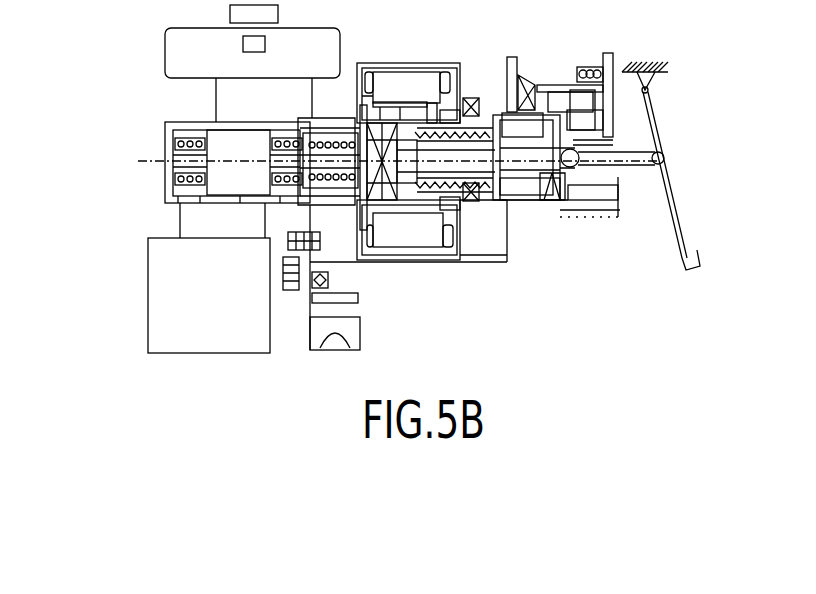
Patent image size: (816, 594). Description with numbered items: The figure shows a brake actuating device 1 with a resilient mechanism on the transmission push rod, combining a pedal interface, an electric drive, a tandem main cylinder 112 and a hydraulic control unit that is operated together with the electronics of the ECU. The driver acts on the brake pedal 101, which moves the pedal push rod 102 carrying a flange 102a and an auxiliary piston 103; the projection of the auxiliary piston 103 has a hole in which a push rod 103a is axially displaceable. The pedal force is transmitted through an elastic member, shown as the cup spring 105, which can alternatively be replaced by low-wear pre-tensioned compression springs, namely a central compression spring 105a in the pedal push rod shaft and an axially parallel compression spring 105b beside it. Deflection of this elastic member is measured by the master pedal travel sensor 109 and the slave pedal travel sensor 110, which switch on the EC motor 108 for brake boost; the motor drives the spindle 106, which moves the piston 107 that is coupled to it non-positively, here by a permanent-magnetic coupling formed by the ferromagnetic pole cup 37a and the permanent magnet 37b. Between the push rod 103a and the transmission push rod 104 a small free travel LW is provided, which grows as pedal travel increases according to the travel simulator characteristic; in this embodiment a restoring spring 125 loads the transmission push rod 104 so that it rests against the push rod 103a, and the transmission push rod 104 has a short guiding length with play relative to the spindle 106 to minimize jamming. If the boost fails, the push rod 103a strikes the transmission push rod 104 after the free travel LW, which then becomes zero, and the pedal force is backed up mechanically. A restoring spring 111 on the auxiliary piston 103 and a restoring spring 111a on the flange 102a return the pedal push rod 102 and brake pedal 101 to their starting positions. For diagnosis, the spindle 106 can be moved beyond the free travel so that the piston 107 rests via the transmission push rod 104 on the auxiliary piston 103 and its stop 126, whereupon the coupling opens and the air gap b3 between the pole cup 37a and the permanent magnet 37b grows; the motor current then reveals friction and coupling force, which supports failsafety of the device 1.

The tandem main cylinder 112 is at (168, 124).
The electronic control unit ECU is at (153, 283).
The free travel LW is at (357, 126).
The restoring spring 125 is at (368, 205).
The EC motor 108 is at (390, 80).
The transmission push rod 104 is at (428, 70).
The spindle 106 is at (462, 262).
The actuator 1 is at (392, 200).
The DK piston 107 is at (402, 200).
The pedal travel sensor slave 110 is at (508, 100).
The restoring spring on pedal push rod 111a is at (515, 57).
The pedal travel sensor master 109 is at (530, 80).
The auxiliary piston 103 is at (613, 118).
The central compression spring 105a is at (567, 112).
The axially parallel compression spring 105b is at (593, 67).
The pedal push rod 102 is at (676, 158).
The flange 102a is at (623, 66).
The brake pedal 101 is at (668, 195).
The stop 126 is at (620, 190).
The gap b3 is at (620, 214).
The restoring spring on auxiliary piston 111 is at (595, 212).
The elastic member cup spring 105 is at (549, 200).
The push rod 103a is at (527, 200).
The permanent magnet 37b is at (330, 280).
The pole cup 37a is at (358, 298).